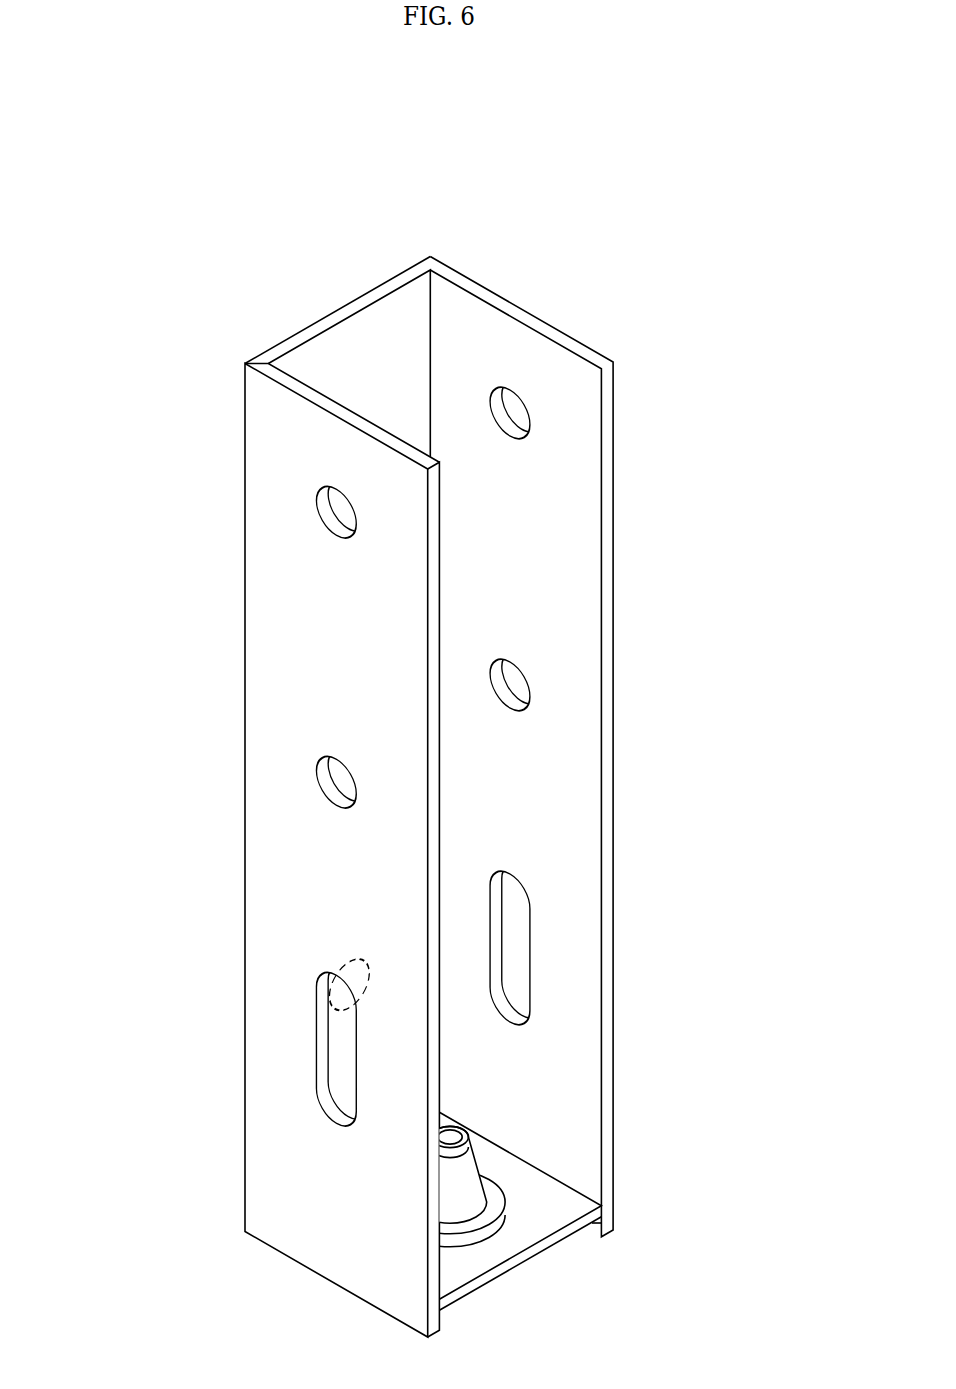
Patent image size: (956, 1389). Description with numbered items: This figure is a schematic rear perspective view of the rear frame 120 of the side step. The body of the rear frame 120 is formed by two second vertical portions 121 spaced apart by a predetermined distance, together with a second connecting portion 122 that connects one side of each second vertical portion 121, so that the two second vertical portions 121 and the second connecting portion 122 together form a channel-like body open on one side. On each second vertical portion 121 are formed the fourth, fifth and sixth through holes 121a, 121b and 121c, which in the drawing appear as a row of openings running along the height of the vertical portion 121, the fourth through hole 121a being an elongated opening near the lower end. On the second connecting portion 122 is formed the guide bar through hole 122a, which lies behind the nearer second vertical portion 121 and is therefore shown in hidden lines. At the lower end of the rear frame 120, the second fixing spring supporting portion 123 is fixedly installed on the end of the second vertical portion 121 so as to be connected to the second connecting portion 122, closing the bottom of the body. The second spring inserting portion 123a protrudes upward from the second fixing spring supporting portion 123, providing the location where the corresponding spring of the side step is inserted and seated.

The rear frame 120 is at (458, 122).
The second vertical portion 121 is at (277, 697).
The fourth through hole 121a is at (517, 965).
The fifth through hole 121b is at (517, 684).
The sixth through hole 121c is at (517, 412).
The second connecting portion 122 is at (350, 346).
The guide bar through hole 122a is at (347, 970).
The second fixing spring supporting portion 123 is at (493, 1245).
The second spring inserting portion 123a is at (465, 1135).